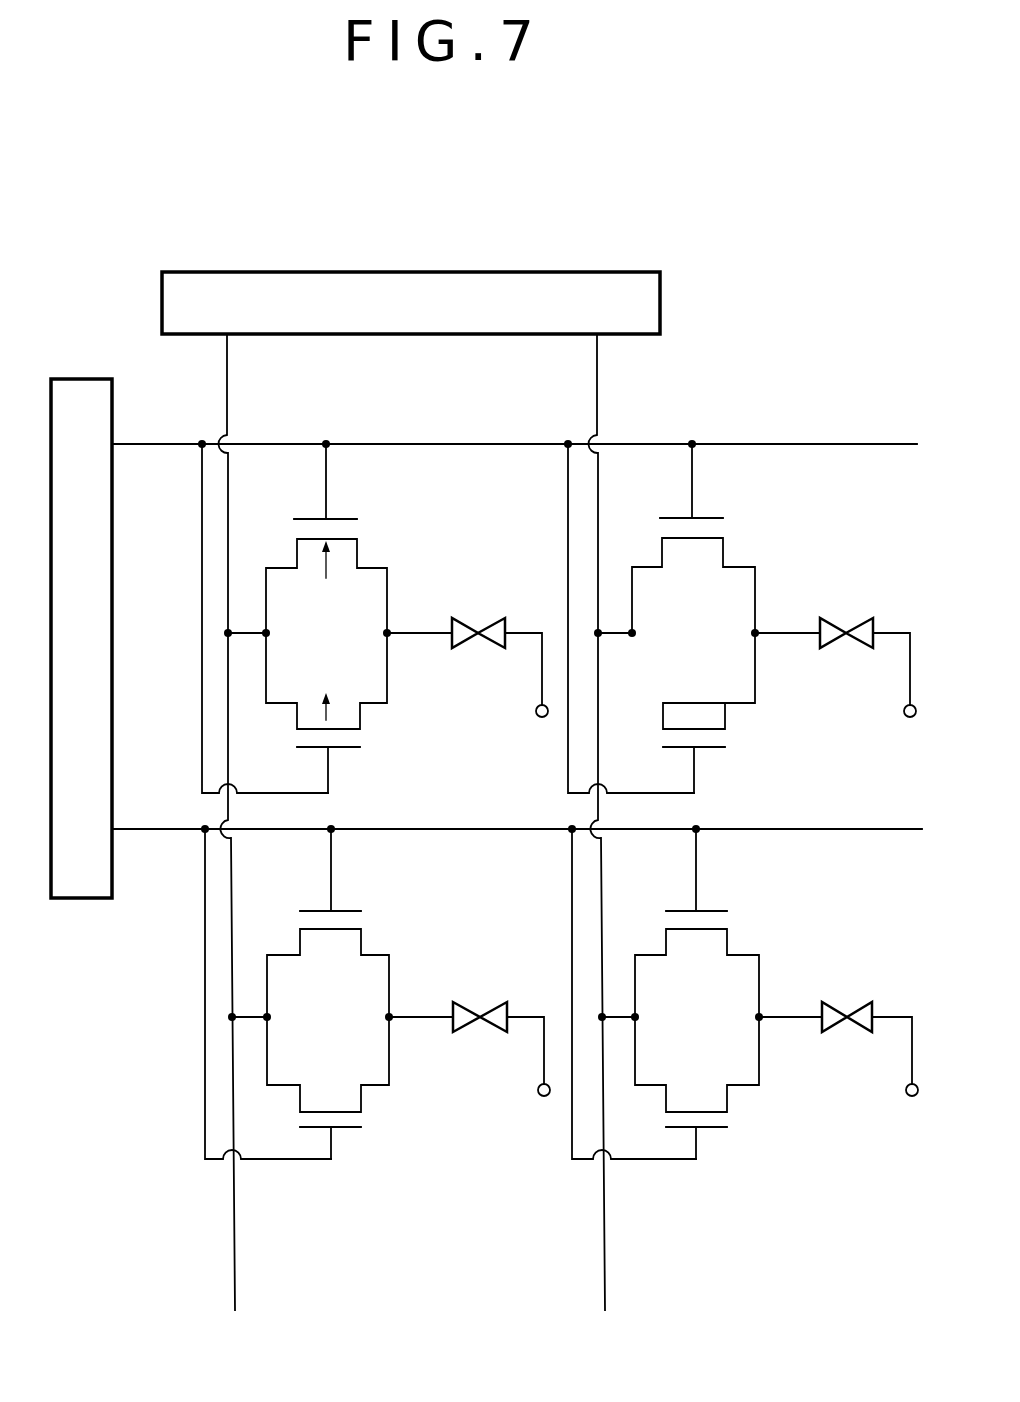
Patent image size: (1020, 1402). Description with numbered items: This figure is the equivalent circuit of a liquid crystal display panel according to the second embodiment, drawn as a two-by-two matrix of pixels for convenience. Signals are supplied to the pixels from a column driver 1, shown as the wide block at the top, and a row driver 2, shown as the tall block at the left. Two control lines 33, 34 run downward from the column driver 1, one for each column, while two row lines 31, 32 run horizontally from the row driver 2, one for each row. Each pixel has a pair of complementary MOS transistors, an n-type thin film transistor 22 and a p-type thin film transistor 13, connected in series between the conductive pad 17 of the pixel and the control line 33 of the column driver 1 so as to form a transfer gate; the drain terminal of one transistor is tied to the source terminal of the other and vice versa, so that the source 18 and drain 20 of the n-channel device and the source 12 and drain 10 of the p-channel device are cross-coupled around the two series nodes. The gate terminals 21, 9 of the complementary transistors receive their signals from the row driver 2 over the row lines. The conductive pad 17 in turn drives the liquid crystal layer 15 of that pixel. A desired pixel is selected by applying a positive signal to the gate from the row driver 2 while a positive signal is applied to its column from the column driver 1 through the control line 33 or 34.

The column driver 1 is at (619, 272).
The row driver 2 is at (93, 899).
The gate terminal 9 is at (345, 752).
The drain of the p-channel transistor 10 is at (297, 720).
The source of the p-channel transistor 12 is at (360, 718).
The p-channel thin film transistor 13 is at (357, 737).
The liquid crystal layer 15 is at (463, 647).
The conductive pad 17 is at (452, 640).
The source of the n-channel transistor 18 is at (360, 556).
The drain of the n-channel transistor 20 is at (296, 556).
The gate terminal 21 is at (342, 518).
The n-channel thin film transistor 22 is at (353, 532).
The row line 31 is at (176, 444).
The row line 32 is at (187, 829).
The control line 33 is at (230, 420).
The control line 34 is at (599, 420).